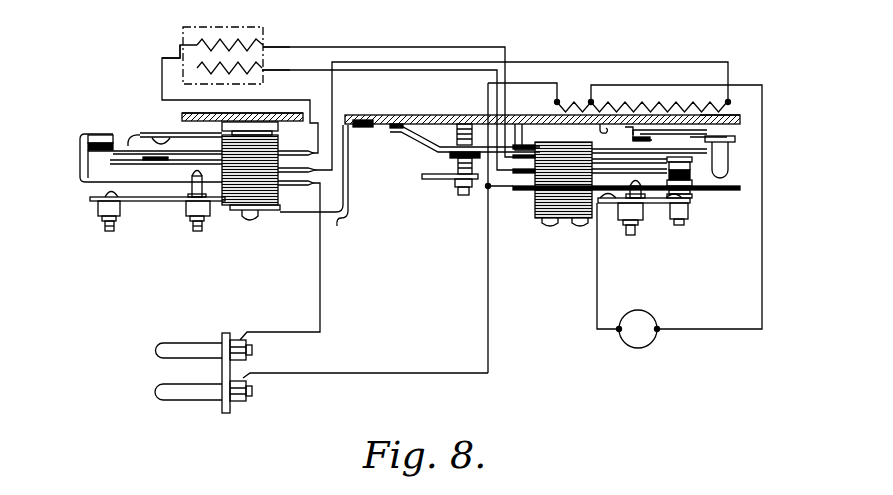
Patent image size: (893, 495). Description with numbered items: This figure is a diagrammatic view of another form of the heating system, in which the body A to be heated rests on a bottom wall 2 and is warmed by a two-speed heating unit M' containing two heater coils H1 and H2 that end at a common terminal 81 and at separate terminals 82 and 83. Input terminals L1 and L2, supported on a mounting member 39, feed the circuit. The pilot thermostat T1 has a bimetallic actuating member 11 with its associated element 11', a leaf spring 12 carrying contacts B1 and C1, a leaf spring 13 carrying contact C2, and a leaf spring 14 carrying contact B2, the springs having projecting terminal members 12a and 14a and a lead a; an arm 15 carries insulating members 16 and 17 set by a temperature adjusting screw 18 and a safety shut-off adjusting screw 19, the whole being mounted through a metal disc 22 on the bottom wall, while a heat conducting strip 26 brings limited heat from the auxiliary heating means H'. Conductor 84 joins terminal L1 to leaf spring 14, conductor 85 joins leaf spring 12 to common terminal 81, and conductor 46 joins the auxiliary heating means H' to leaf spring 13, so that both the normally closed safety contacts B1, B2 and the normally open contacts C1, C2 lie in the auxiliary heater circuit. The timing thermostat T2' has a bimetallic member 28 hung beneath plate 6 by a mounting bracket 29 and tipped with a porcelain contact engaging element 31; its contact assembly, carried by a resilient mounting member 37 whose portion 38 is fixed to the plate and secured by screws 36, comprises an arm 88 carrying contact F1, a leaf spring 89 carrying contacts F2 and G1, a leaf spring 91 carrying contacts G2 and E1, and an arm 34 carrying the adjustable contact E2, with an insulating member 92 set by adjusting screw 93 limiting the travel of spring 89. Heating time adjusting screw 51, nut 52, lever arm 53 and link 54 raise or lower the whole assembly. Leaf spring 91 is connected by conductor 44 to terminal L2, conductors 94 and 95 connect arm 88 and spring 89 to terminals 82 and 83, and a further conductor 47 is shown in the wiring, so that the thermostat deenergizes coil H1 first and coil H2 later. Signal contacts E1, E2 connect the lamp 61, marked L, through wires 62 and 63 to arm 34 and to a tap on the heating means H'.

The bottom wall 2 is at (290, 118).
The horizontally extending plate 6 is at (742, 119).
The bimetallic actuating member 11 is at (181, 128).
The contact arm end 11' is at (134, 127).
The leaf spring 12 is at (183, 152).
The projecting terminal member 12a is at (296, 150).
The leaf spring 13 is at (188, 160).
The leaf spring 14 is at (90, 183).
The projecting terminal member 14a is at (289, 183).
The arm 15 is at (140, 205).
The insulating member 16 is at (205, 195).
The insulating member 17 is at (119, 195).
The temperature adjusting screw 18 is at (197, 226).
The safety shut-off adjusting screw 19 is at (105, 226).
The metal disc 22 is at (247, 124).
The heat conducting strip 26 is at (326, 178).
The bimetallic member 28 is at (707, 132).
The mounting bracket 29 is at (603, 127).
The contact engaging element 31 is at (733, 172).
The arm 34 is at (606, 209).
The screws 36 is at (577, 223).
The resilient mounting member 37 is at (524, 122).
The portion of mounting member 38 is at (444, 123).
The mounting member 39 is at (226, 333).
The conductor 44 is at (487, 320).
The conductor 46 is at (568, 63).
The conductor 47 is at (522, 82).
The heating time adjusting screw 51 is at (455, 172).
The nut 52 is at (440, 153).
The lever arm 53 is at (460, 190).
The link 54 is at (428, 180).
The electric lamp 61 is at (633, 342).
The wire 62 is at (597, 300).
The wire 63 is at (762, 303).
The common terminal 81 is at (178, 58).
The terminal 82 is at (266, 47).
The terminal 83 is at (266, 69).
The conductor 84 is at (320, 288).
The conductor 85 is at (285, 99).
The arm 88 is at (628, 140).
The leaf spring 89 is at (648, 176).
The leaf spring 91 is at (746, 190).
The insulating member 92 is at (648, 205).
The adjusting screw 93 is at (627, 226).
The conductor 94 is at (439, 40).
The conductor 95 is at (390, 71).
The body to be heated A is at (229, 107).
The safety shut-off contact member B1 is at (88, 147).
The safety shut-off contact member B2 is at (124, 137).
The contact member C1 is at (140, 153).
The contact member C2 is at (140, 163).
The signal circuit contact E1 is at (641, 200).
The signal circuit contact member E2 is at (672, 219).
The contact F1 is at (692, 163).
The contact F2 is at (690, 167).
The contact G1 is at (690, 192).
The contact G2 is at (686, 188).
The heater coil H1 is at (197, 45).
The heater coil H2 is at (197, 68).
The auxiliary electric heating means H' is at (642, 73).
The lamp L is at (618, 358).
The input terminal L1 is at (194, 348).
The input terminal L2 is at (177, 398).
The two-speed heating unit M' is at (204, 48).
The pilot thermostat T1 is at (64, 182).
The timing thermostat T2' is at (655, 199).
The lead a is at (316, 170).